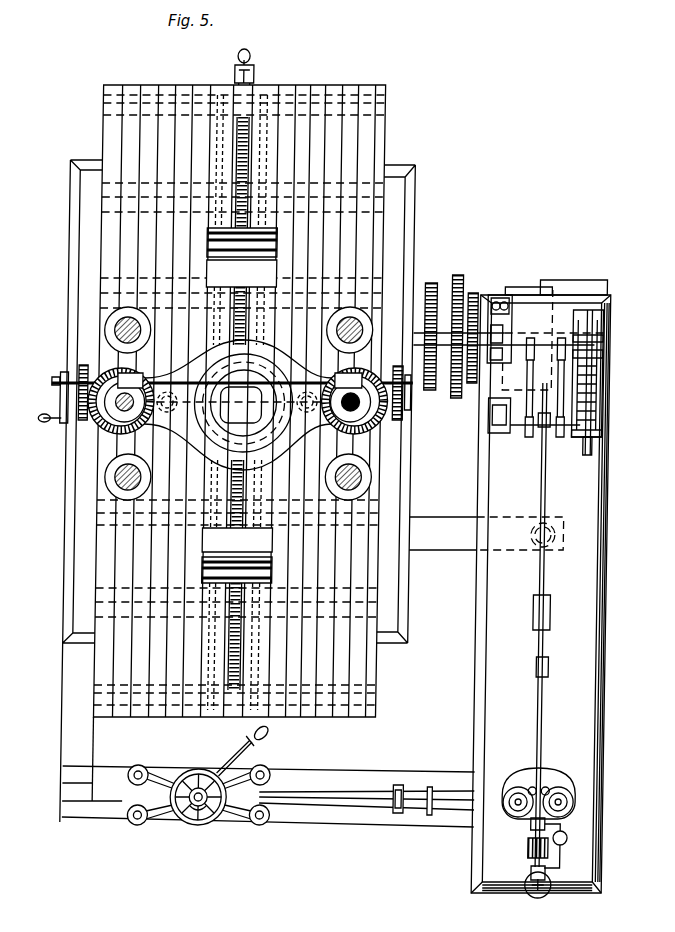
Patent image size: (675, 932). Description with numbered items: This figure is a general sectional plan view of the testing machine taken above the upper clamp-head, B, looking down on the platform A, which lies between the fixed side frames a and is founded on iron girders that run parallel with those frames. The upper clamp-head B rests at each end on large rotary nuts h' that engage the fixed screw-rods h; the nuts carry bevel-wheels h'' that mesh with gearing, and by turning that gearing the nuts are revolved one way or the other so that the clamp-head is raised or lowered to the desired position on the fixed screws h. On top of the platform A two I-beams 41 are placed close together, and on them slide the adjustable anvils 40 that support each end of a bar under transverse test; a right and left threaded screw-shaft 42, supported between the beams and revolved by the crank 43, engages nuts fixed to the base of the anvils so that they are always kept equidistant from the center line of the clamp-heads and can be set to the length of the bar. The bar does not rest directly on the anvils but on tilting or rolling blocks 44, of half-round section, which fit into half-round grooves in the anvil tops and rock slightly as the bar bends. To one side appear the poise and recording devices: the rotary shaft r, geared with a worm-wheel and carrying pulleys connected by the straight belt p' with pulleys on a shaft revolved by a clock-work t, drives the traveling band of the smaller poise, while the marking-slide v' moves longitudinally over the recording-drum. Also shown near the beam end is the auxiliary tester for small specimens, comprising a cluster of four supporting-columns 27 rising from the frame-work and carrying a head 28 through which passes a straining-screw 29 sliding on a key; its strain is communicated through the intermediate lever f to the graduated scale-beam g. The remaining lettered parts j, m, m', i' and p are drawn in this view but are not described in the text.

The platform A is at (239, 401).
The fixed side frames a is at (424, 643).
The I-beams 41 is at (233, 402).
The right and left threaded screw-shaft 42 is at (251, 142).
The crank 43 is at (251, 54).
The tilting or rolling blocks 44 is at (239, 406).
The adjustable blocks or anvils 40 is at (211, 581).
The upper clamp-head B is at (240, 405).
The pin hole m is at (181, 405).
The pin hole m' is at (294, 400).
The fixed screw-rods h is at (121, 401).
The rotary nuts h' is at (354, 404).
The bevel-wheels h'' is at (238, 410).
The journal bearings j is at (146, 331).
The gear train i' is at (450, 350).
The marking-slide or carriage v' is at (521, 339).
The clock-work t is at (518, 318).
The straight belt p' is at (524, 387).
The pulley p is at (557, 387).
The rotary shaft r is at (556, 430).
The graduated scale-beam g is at (518, 625).
The intermediate lever f is at (358, 805).
The head 28 is at (232, 813).
The straining-screw 29 is at (198, 784).
The uprights or supporting-columns 27 is at (141, 781).